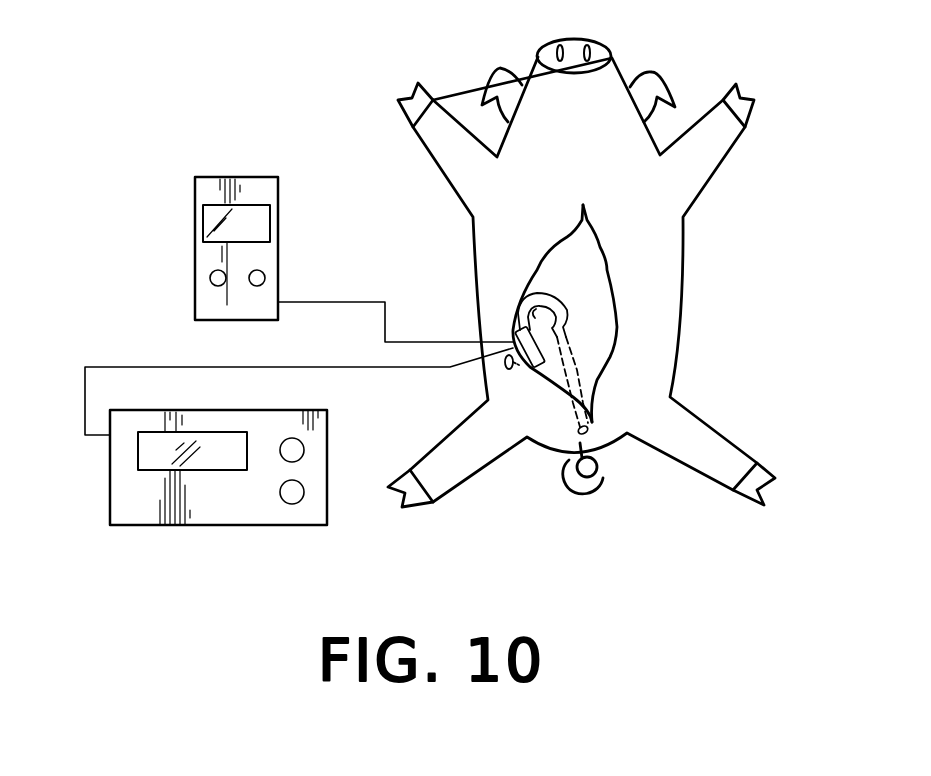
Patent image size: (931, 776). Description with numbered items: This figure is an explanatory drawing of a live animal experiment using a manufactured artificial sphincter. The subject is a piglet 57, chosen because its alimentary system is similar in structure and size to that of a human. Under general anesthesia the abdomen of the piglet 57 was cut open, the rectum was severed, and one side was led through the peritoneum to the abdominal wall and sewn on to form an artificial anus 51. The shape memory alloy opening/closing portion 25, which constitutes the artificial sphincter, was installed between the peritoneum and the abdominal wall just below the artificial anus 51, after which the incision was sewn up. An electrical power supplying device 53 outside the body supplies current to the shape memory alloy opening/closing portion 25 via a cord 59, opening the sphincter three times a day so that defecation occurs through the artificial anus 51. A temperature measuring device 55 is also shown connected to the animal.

The shape memory alloy opening/closing portion 25 is at (517, 320).
The artificial anus 51 is at (490, 363).
The electrical power supplying device 53 is at (242, 177).
The temperature measuring device 55 is at (212, 515).
The piglet 57 is at (673, 287).
The cord 59 is at (437, 342).